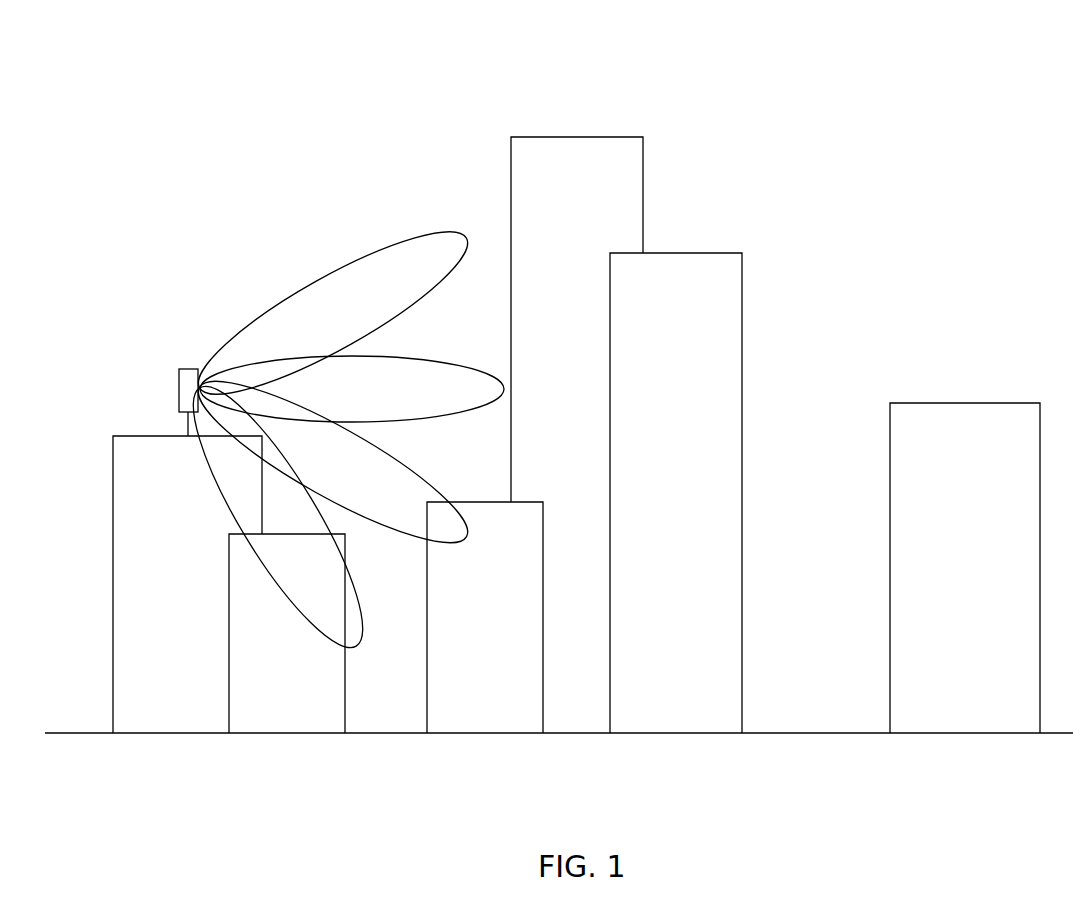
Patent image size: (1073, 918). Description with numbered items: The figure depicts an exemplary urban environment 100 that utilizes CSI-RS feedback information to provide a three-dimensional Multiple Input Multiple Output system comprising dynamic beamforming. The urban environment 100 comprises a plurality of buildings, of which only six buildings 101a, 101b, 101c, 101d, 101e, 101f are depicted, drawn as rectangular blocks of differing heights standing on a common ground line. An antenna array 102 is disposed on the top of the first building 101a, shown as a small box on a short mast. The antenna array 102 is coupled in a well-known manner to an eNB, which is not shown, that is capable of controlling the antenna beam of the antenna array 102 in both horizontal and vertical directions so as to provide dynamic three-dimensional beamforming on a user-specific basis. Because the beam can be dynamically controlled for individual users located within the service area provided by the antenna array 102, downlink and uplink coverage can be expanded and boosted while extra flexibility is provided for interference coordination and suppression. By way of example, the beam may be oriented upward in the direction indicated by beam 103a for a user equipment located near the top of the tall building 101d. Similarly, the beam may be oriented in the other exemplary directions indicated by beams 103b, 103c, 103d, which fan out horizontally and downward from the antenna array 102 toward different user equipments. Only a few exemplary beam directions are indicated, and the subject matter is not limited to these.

The urban environment 100 is at (170, 111).
The building 101a is at (187, 584).
The building 101b is at (287, 633).
The building 101c is at (485, 617).
The building 101d is at (577, 319).
The building 101e is at (676, 493).
The building 101f is at (965, 568).
The antenna array 102 is at (189, 393).
The antenna beam 103a is at (333, 313).
The antenna beam 103b is at (352, 389).
The antenna beam 103c is at (332, 462).
The antenna beam 103d is at (277, 517).